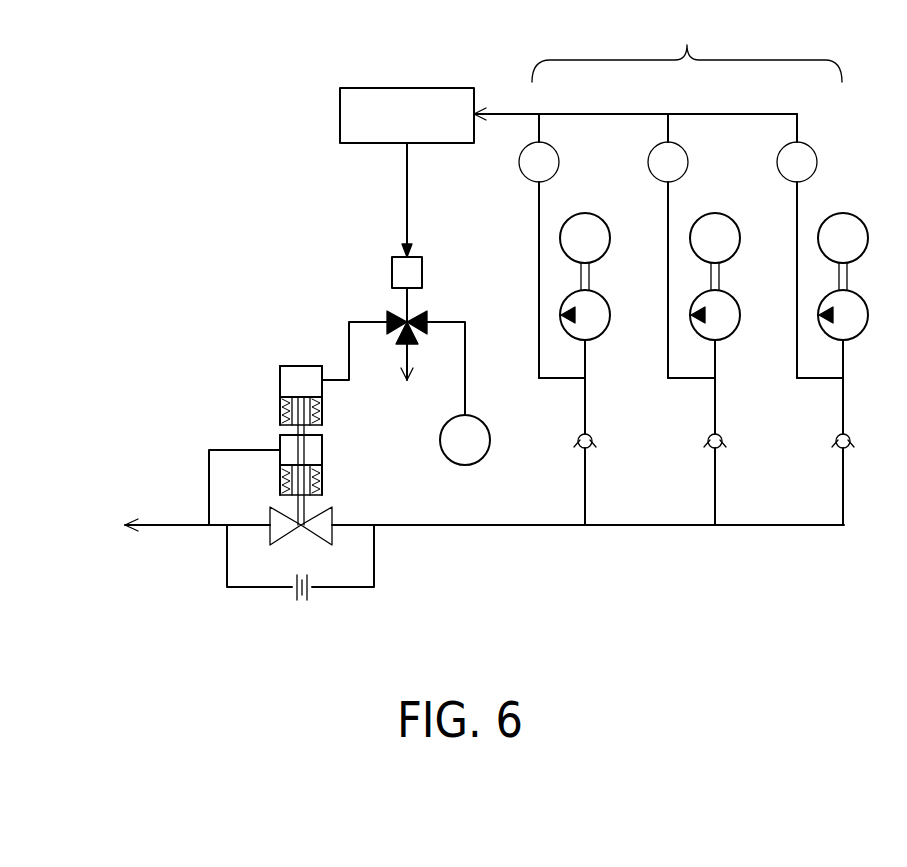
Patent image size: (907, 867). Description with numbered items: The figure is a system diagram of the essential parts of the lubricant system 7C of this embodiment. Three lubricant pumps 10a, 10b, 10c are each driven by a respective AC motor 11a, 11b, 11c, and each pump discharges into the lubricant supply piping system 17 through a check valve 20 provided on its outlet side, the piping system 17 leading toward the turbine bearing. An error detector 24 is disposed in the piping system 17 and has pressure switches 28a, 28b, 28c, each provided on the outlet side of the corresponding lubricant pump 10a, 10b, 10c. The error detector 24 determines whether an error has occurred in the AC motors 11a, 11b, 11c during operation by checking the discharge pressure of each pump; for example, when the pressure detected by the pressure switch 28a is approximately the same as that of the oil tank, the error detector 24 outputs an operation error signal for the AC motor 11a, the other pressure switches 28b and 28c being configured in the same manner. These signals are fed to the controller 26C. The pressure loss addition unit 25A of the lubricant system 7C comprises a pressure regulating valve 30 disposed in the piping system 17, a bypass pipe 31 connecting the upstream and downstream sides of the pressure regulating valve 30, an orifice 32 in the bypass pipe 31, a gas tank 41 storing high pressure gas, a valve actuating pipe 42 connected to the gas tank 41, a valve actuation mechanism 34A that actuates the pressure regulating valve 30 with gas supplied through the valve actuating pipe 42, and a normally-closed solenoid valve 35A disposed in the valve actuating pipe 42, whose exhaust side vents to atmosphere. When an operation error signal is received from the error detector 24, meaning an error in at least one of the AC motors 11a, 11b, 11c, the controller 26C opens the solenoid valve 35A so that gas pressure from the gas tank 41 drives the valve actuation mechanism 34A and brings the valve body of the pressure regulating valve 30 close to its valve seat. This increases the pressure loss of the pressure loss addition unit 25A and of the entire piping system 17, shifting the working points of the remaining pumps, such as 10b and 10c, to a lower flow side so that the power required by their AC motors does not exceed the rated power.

The error detector 24 is at (673, 38).
The pressure switch 28a is at (557, 148).
The pressure switch 28b is at (686, 148).
The pressure switch 28c is at (816, 148).
The controller 26C is at (340, 118).
The AC motor 11a is at (608, 233).
The AC motor 11b is at (738, 233).
The AC motor 11c is at (866, 233).
The lubricant pump 10a is at (608, 312).
The lubricant pump 10b is at (738, 312).
The lubricant pump 10c is at (866, 312).
The check valve 20 is at (594, 438).
The lubricant system 7C is at (678, 540).
The lubricant supply piping system 17 is at (170, 523).
The bypass pipe 31 is at (374, 557).
The orifice 32 is at (298, 600).
The pressure loss addition unit 25A is at (280, 352).
The valve actuation mechanism 34A is at (280, 381).
The pressure regulating valve 30 is at (322, 452).
The normally-closed solenoid valve 35A is at (387, 318).
The valve actuating pipe 42 is at (465, 345).
The gas tank 41 is at (490, 440).